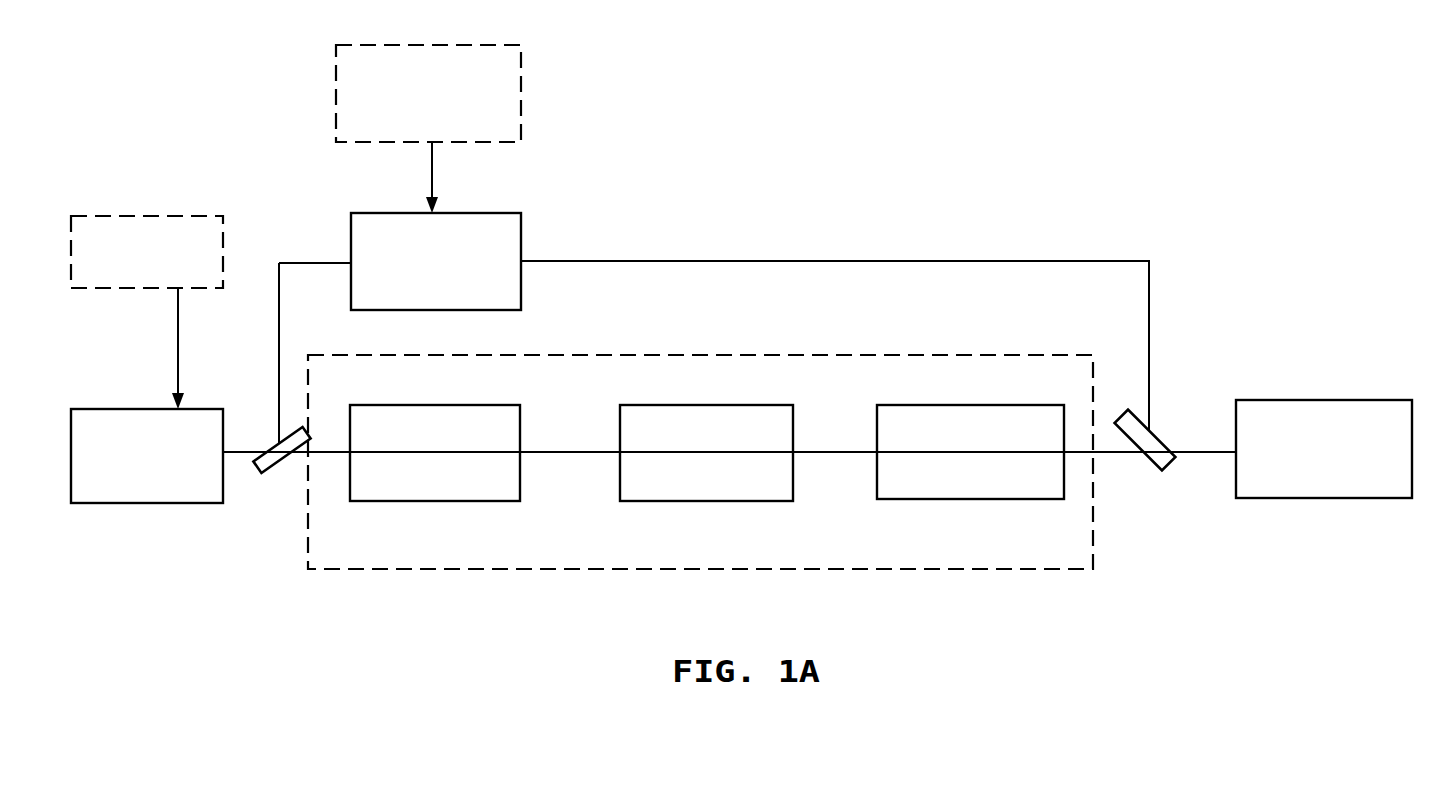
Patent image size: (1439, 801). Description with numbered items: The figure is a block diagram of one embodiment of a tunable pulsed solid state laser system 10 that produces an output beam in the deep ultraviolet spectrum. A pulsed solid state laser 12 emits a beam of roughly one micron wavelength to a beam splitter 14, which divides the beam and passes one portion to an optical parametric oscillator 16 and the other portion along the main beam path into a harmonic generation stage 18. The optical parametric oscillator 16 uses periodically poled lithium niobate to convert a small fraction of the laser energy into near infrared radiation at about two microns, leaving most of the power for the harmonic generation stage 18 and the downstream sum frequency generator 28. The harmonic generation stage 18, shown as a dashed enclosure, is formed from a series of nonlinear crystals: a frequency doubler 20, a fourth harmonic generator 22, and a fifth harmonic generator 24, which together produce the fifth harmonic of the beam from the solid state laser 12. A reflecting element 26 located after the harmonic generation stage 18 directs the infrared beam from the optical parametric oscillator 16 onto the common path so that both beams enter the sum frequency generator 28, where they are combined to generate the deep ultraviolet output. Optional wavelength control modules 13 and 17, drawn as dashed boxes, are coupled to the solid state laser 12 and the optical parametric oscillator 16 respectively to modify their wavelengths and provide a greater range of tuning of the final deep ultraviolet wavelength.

The solid state laser system 10 is at (858, 238).
The pulsed solid state laser 12 is at (137, 400).
The wavelength control module 13 is at (105, 195).
The beam splitter 14 is at (263, 474).
The optical parametric oscillator 16 is at (530, 223).
The wavelength control module 17 is at (327, 52).
The harmonic generation stage 18 is at (1102, 572).
The frequency doubler 20 is at (468, 508).
The fourth harmonic generator 22 is at (746, 508).
The fifth harmonic generator 24 is at (1008, 501).
The mirror 26 is at (1173, 468).
The sum frequency generator 28 is at (1365, 506).